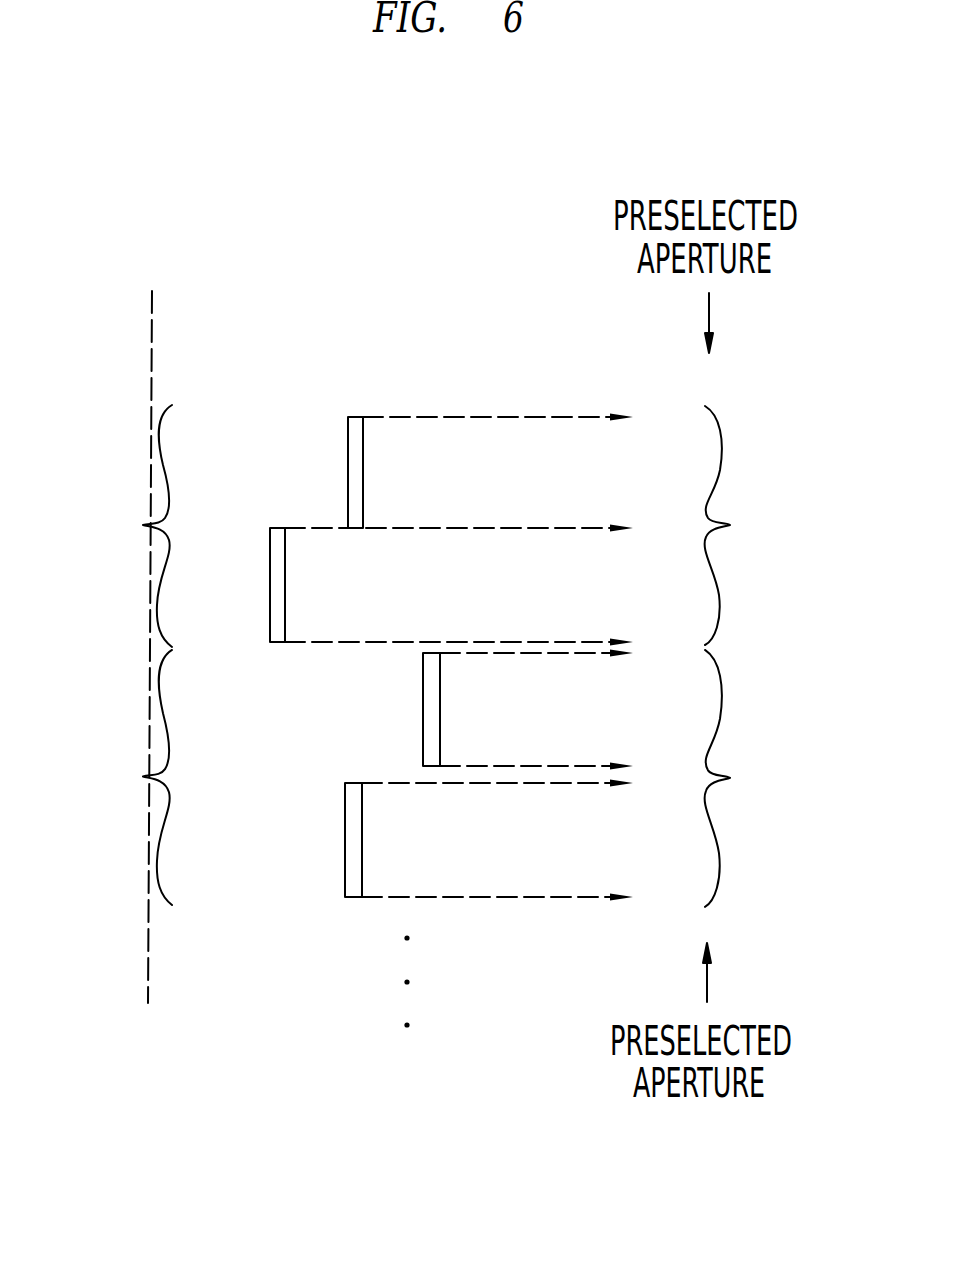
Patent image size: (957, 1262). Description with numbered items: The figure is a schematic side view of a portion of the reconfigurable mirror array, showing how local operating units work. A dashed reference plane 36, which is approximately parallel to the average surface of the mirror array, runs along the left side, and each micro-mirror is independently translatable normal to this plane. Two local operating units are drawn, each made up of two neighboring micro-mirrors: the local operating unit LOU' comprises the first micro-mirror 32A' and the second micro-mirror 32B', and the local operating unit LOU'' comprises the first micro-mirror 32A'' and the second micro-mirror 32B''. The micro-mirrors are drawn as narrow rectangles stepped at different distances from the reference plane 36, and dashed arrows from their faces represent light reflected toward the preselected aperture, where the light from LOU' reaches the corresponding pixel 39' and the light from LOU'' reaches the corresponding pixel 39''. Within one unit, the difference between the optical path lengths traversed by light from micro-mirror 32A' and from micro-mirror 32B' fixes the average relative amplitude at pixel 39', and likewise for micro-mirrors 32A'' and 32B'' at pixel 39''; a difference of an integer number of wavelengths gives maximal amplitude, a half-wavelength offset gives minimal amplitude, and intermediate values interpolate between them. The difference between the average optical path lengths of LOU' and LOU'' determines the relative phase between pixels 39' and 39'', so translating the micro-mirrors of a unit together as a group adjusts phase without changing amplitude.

The reference plane 36 is at (144, 957).
The first micro-mirror of local operating unit LOU' 32A' is at (310, 472).
The second micro-mirror of local operating unit LOU' 32B' is at (231, 585).
The first micro-mirror of local operating unit LOU'' 32A'' is at (378, 709).
The second micro-mirror of local operating unit LOU'' 32B'' is at (303, 840).
The pixel of the preselected aperture corresponding to LOU' 39' is at (755, 525).
The pixel of the preselected aperture corresponding to LOU'' 39'' is at (760, 778).
The local operating unit LOU' is at (117, 526).
The local operating unit LOU'' is at (109, 777).